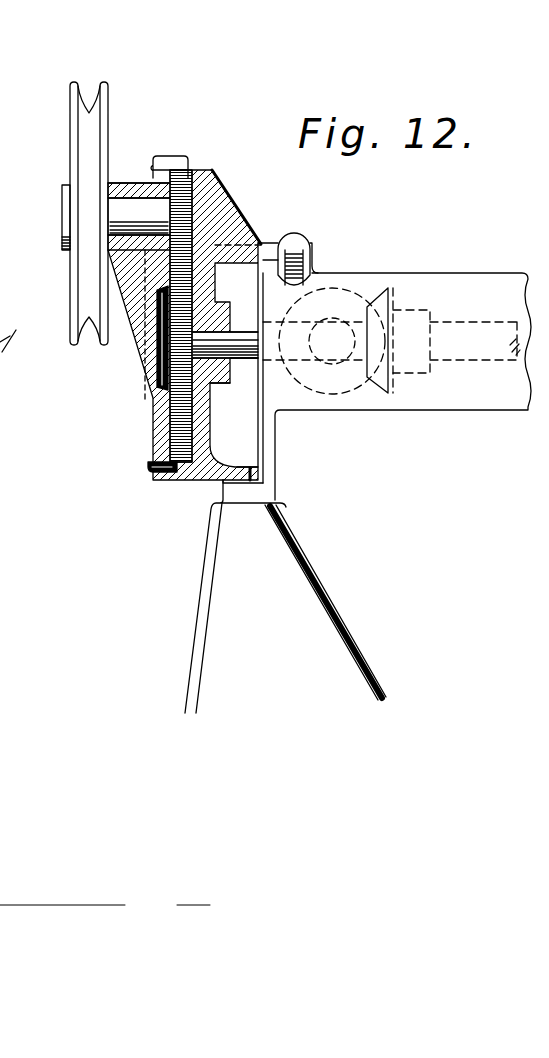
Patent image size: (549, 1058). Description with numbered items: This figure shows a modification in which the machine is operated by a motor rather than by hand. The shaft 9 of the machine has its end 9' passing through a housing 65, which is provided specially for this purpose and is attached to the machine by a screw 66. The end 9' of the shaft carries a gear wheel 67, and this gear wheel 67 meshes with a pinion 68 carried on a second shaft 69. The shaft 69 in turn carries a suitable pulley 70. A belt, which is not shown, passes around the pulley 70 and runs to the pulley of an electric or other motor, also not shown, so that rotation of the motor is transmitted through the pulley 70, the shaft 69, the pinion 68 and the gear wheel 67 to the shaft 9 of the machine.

The pulley 70 is at (80, 145).
The shaft 69 is at (160, 216).
The pinion 68 is at (197, 205).
The screw 66 is at (300, 230).
The shaft 9 is at (356, 341).
The end of shaft 9' is at (234, 392).
The gear wheel 67 is at (156, 387).
The housing 65 is at (166, 456).